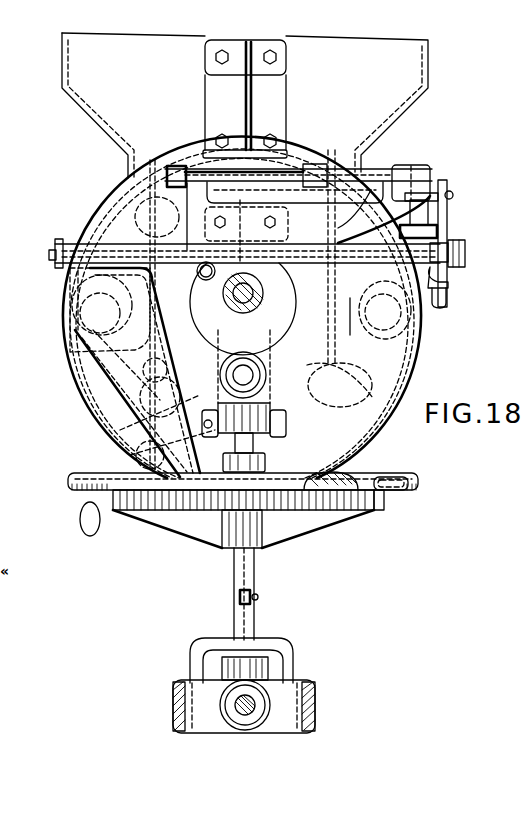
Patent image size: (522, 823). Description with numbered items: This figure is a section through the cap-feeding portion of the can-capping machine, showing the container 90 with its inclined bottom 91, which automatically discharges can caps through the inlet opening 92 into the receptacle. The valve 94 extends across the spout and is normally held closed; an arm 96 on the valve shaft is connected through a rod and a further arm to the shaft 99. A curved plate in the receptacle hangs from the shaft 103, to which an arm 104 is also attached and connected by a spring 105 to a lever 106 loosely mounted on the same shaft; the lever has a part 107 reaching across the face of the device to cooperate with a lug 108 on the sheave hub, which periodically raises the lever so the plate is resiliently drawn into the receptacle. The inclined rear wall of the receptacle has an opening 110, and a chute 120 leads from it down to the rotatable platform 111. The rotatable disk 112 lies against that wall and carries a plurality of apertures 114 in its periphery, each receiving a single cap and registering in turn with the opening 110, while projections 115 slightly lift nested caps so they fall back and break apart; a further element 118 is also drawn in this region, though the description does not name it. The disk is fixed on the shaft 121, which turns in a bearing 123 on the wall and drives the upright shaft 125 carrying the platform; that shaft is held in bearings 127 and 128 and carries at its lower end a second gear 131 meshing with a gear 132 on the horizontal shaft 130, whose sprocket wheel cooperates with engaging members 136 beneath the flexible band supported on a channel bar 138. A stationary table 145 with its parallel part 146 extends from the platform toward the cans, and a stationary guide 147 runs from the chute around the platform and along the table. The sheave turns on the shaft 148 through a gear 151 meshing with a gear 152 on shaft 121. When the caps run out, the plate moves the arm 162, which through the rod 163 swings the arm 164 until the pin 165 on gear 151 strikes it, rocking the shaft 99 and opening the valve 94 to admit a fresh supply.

The container 90 is at (83, 57).
The inclined bottom 91 is at (217, 418).
The inlet opening 92 is at (180, 360).
The valve 94 is at (262, 283).
The arm 96 is at (410, 212).
The shaft 99 is at (294, 220).
The shaft 103 is at (50, 256).
The arm 104 is at (450, 283).
The spring 105 is at (442, 292).
The lever 106 is at (58, 249).
The part 107 is at (140, 250).
The lug 108 is at (296, 282).
The opening 110 is at (193, 277).
The rotatable platform 111 is at (70, 493).
The rotatable disk 112 is at (45, 293).
The apertures 114 is at (190, 380).
The projections 115 is at (355, 355).
The rod block 118 is at (160, 200).
The chute 120 is at (167, 460).
The shaft 121 is at (272, 396).
The bearing 123 is at (135, 215).
The upright shaft 125 is at (256, 570).
The bearing 127 is at (253, 437).
The bearing 128 is at (260, 650).
The horizontal shaft 130 is at (242, 708).
The second gear 131 is at (270, 667).
The gear 132 is at (262, 712).
The engaging members 136 is at (22, 626).
The channel bar 138 is at (0, 657).
The stationary table 145 is at (388, 493).
The part of table 146 is at (360, 520).
The stationary guide 147 is at (150, 357).
The shaft 148 is at (310, 328).
The gear 151 is at (352, 320).
The gear 152 is at (262, 368).
The arm 162 is at (413, 208).
The rod 163 is at (455, 195).
The arm 164 is at (425, 170).
The pin 165 is at (100, 313).